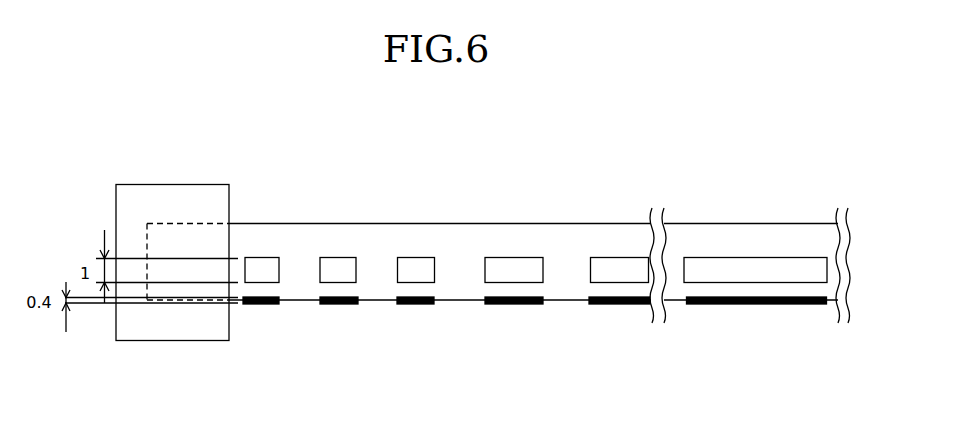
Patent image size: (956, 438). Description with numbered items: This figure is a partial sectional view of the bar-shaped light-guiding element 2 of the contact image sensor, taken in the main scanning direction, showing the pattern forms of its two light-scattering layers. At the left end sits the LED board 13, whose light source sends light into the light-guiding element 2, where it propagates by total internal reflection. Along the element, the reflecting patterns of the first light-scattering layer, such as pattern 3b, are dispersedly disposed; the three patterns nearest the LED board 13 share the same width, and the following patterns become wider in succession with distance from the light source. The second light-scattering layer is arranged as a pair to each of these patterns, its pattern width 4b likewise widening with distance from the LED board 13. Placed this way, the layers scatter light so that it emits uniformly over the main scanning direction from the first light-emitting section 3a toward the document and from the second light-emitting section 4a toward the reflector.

The light-guiding element 2 is at (555, 223).
The LED board 13 is at (182, 184).
The second light-emitting section 4a is at (418, 258).
The pattern width of the second light-scattering layer 4b is at (763, 262).
The first light-emitting section 3a is at (402, 305).
The pattern of the first light-scattering layer 3b is at (750, 305).